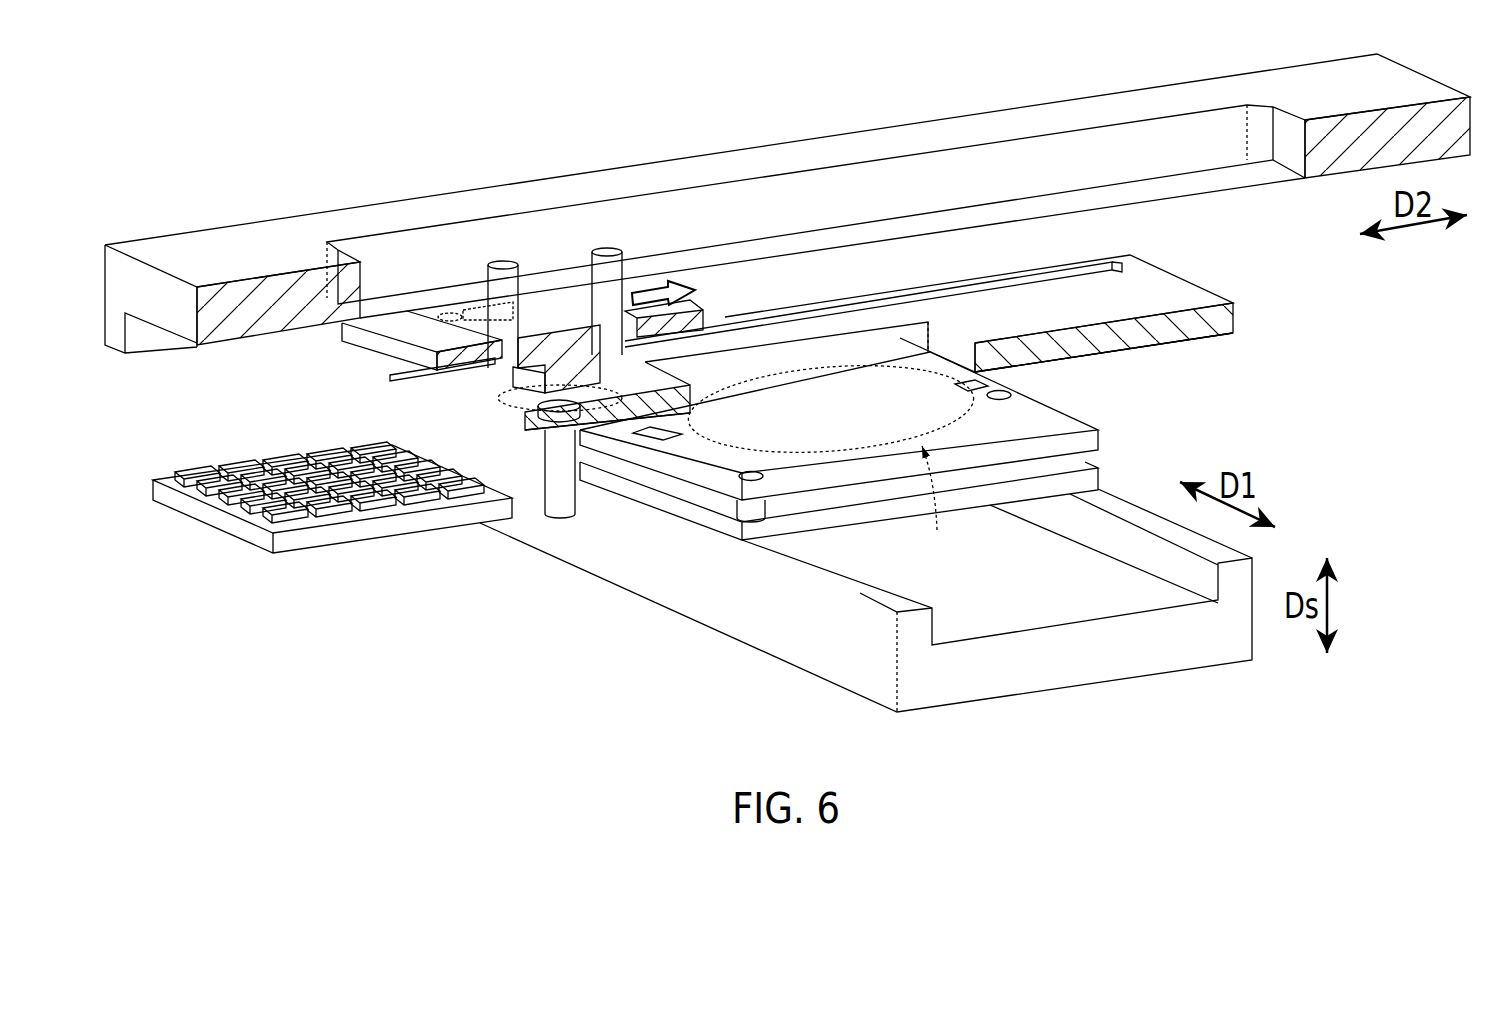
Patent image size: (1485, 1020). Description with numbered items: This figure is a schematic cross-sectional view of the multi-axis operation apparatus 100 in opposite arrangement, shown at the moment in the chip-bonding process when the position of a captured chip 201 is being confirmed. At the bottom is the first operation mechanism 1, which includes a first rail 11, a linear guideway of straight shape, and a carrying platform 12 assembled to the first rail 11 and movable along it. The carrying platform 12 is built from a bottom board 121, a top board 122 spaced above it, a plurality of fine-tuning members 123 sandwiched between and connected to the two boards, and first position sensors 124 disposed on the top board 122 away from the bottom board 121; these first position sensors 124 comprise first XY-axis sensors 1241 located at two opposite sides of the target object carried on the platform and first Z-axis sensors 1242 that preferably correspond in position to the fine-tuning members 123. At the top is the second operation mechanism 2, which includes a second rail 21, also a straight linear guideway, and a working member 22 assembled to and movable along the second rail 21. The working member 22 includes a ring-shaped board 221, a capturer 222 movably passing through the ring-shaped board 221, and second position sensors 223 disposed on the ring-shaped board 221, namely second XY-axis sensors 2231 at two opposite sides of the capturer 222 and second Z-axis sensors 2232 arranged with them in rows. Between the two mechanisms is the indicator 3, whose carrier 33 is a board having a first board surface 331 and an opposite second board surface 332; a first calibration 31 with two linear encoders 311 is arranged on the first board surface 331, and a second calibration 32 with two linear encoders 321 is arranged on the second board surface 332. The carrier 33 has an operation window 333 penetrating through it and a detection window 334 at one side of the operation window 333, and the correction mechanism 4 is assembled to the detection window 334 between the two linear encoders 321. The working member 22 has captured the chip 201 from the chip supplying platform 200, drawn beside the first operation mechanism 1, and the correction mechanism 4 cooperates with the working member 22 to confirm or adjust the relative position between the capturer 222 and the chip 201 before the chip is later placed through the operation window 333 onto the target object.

The multi-axis operation apparatus 100 is at (182, 198).
The first operation mechanism 1 is at (828, 716).
The first rail 11 is at (748, 640).
The carrying platform 12 is at (816, 527).
The bottom board 121 is at (975, 500).
The top board 122 is at (875, 478).
The fine-tuning members 123 is at (757, 515).
The first position sensors 124 is at (706, 660).
The first XY-axis sensors 1241 is at (648, 442).
The first Z-axis sensors 1242 is at (745, 484).
The second operation mechanism 2 is at (410, 153).
The second rail 21 is at (312, 222).
The working member 22 is at (401, 316).
The ring-shaped board 221 is at (385, 335).
The capturer 222 is at (565, 318).
The second position sensors 223 is at (565, 140).
The second XY-axis sensors 2231 is at (528, 296).
The second Z-axis sensors 2232 is at (455, 308).
The indicator 3 is at (1208, 421).
The first calibration 31 is at (1000, 376).
The linear encoders 311 is at (683, 419).
The second calibration 32 is at (1183, 340).
The linear encoders 321 is at (1101, 281).
The carrier 33 is at (1142, 346).
The first board surface 331 is at (1213, 349).
The second board surface 332 is at (1158, 293).
The operation window 333 is at (953, 337).
The detection window 334 is at (612, 394).
The correction mechanism 4 is at (565, 516).
The chip supplying platform 200 is at (220, 526).
The chip 201 is at (200, 470).